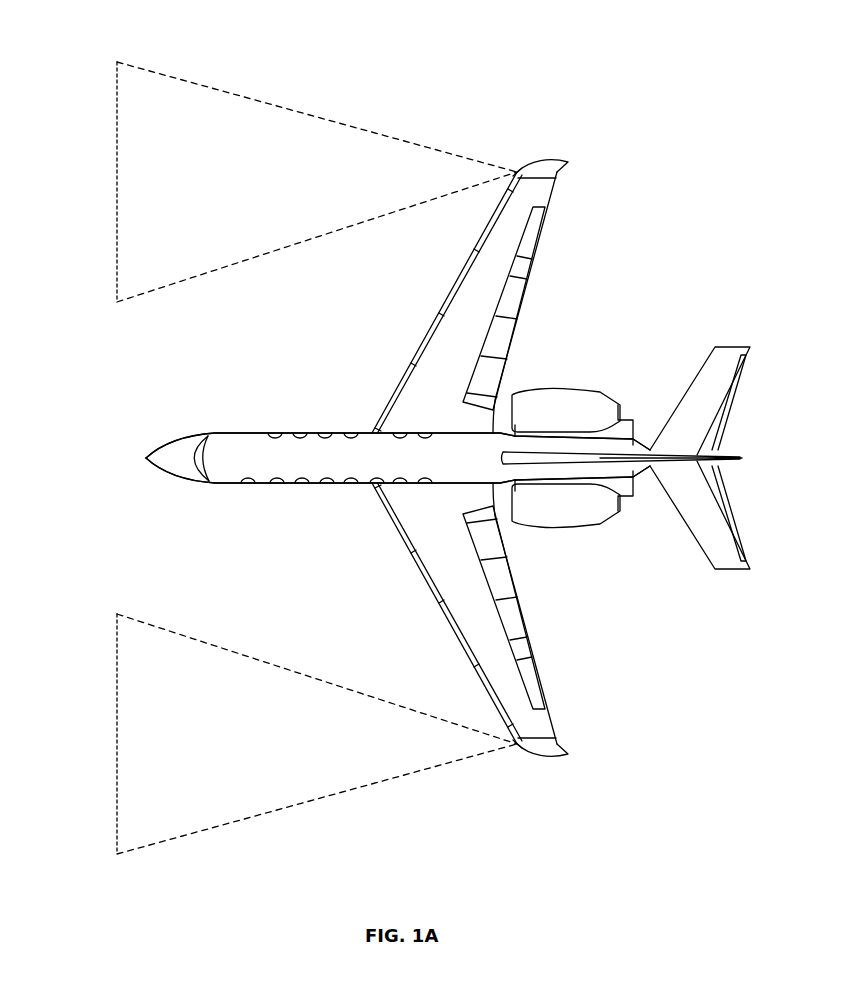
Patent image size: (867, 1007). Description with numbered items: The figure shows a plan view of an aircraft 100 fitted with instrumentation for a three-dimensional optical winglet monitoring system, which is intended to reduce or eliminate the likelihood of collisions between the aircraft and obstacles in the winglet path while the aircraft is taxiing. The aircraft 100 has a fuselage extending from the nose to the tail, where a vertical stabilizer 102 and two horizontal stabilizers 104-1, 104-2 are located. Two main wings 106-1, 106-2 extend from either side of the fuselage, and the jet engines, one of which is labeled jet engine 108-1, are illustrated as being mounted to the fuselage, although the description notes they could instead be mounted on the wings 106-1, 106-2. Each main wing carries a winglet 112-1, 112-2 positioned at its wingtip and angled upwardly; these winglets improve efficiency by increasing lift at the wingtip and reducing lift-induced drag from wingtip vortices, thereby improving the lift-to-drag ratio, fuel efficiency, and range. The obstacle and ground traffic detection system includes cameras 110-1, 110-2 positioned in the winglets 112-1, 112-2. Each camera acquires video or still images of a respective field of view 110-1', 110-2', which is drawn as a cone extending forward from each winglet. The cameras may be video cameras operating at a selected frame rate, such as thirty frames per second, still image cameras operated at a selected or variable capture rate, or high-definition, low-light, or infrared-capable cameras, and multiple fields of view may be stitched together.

The aircraft 100 is at (92, 32).
The vertical stabilizer 102 is at (728, 456).
The horizontal stabilizer 104-1 is at (712, 545).
The horizontal stabilizer 104-2 is at (707, 380).
The main wing 106-1 is at (447, 576).
The main wing 106-2 is at (447, 336).
The jet engine 108-1 is at (563, 513).
The camera 110-1 is at (541, 771).
The camera 110-2 is at (540, 149).
The field of view 110-1' is at (274, 734).
The field of view 110-2' is at (273, 182).
The winglet 112-1 is at (562, 748).
The winglet 112-2 is at (562, 169).